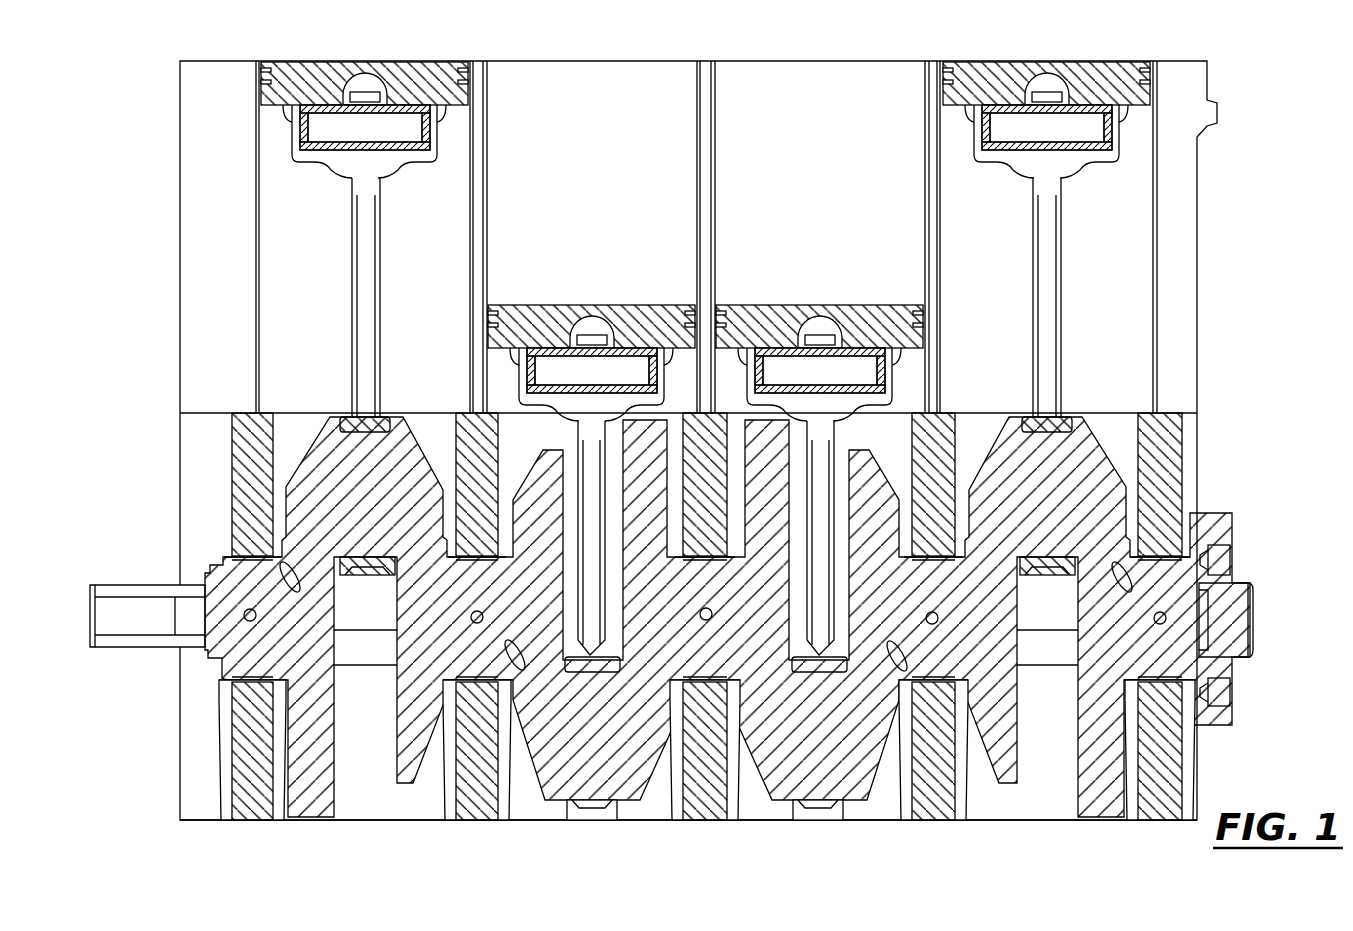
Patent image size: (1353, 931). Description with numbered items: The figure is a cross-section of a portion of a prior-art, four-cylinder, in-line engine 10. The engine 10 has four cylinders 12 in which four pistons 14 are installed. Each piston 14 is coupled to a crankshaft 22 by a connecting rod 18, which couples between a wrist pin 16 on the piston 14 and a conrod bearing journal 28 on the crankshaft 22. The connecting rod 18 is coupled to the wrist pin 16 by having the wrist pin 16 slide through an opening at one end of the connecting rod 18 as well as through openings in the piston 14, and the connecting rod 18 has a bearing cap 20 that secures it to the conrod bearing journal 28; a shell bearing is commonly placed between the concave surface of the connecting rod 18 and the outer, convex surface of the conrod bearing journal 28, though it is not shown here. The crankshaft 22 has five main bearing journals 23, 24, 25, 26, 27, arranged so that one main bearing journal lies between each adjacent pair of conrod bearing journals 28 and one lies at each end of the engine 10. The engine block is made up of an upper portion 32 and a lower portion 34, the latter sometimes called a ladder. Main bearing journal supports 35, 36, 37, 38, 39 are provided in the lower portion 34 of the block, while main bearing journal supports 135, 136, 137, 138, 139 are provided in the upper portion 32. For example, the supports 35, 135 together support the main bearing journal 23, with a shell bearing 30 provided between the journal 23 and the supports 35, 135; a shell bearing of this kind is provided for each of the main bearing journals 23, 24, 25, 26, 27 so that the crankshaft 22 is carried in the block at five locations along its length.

The engine 10 is at (1016, 30).
The cylinder 12 is at (706, 237).
The piston 14 is at (410, 82).
The wrist pin 16 is at (706, 249).
The connecting rod 18 is at (362, 285).
The bearing cap 20 is at (363, 580).
The crankshaft 22 is at (140, 645).
The main bearing journal 23 is at (265, 665).
The main bearing journal 24 is at (487, 660).
The main bearing journal 25 is at (708, 665).
The main bearing journal 26 is at (940, 665).
The main bearing journal 27 is at (1158, 660).
The conrod bearing journal 28 is at (345, 500).
The shell bearing 30 is at (250, 555).
The upper portion 32 is at (190, 200).
The lower portion 34 is at (183, 746).
The main bearing journal support 35 is at (248, 808).
The main bearing journal support 36 is at (481, 808).
The main bearing journal support 37 is at (697, 808).
The main bearing journal support 38 is at (943, 808).
The main bearing journal support 39 is at (1149, 808).
The main bearing journal support 135 is at (250, 440).
The main bearing journal support 136 is at (487, 448).
The main bearing journal support 137 is at (704, 525).
The main bearing journal support 138 is at (940, 452).
The main bearing journal support 139 is at (1165, 471).